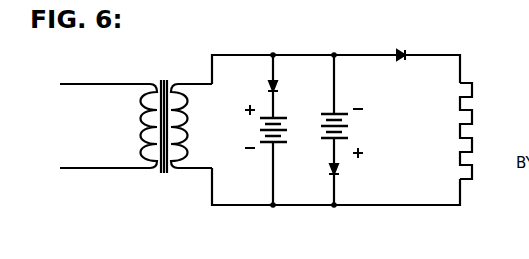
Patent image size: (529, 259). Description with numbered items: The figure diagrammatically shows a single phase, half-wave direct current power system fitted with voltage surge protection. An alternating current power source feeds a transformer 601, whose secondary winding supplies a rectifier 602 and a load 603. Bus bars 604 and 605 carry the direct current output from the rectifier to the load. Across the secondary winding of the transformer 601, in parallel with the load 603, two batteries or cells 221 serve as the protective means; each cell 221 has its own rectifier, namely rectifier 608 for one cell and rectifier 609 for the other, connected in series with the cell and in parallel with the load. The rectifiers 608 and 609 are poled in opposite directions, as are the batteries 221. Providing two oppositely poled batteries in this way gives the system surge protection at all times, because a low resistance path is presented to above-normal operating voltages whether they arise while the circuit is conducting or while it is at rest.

The transformer 601 is at (165, 82).
The rectifier 602 is at (401, 54).
The load 603 is at (474, 110).
The bus bar 604 is at (444, 55).
The bus bar 605 is at (388, 206).
The rectifier 608 is at (341, 170).
The rectifier 609 is at (272, 86).
The protective means (batteries or cells) 221 is at (263, 130).